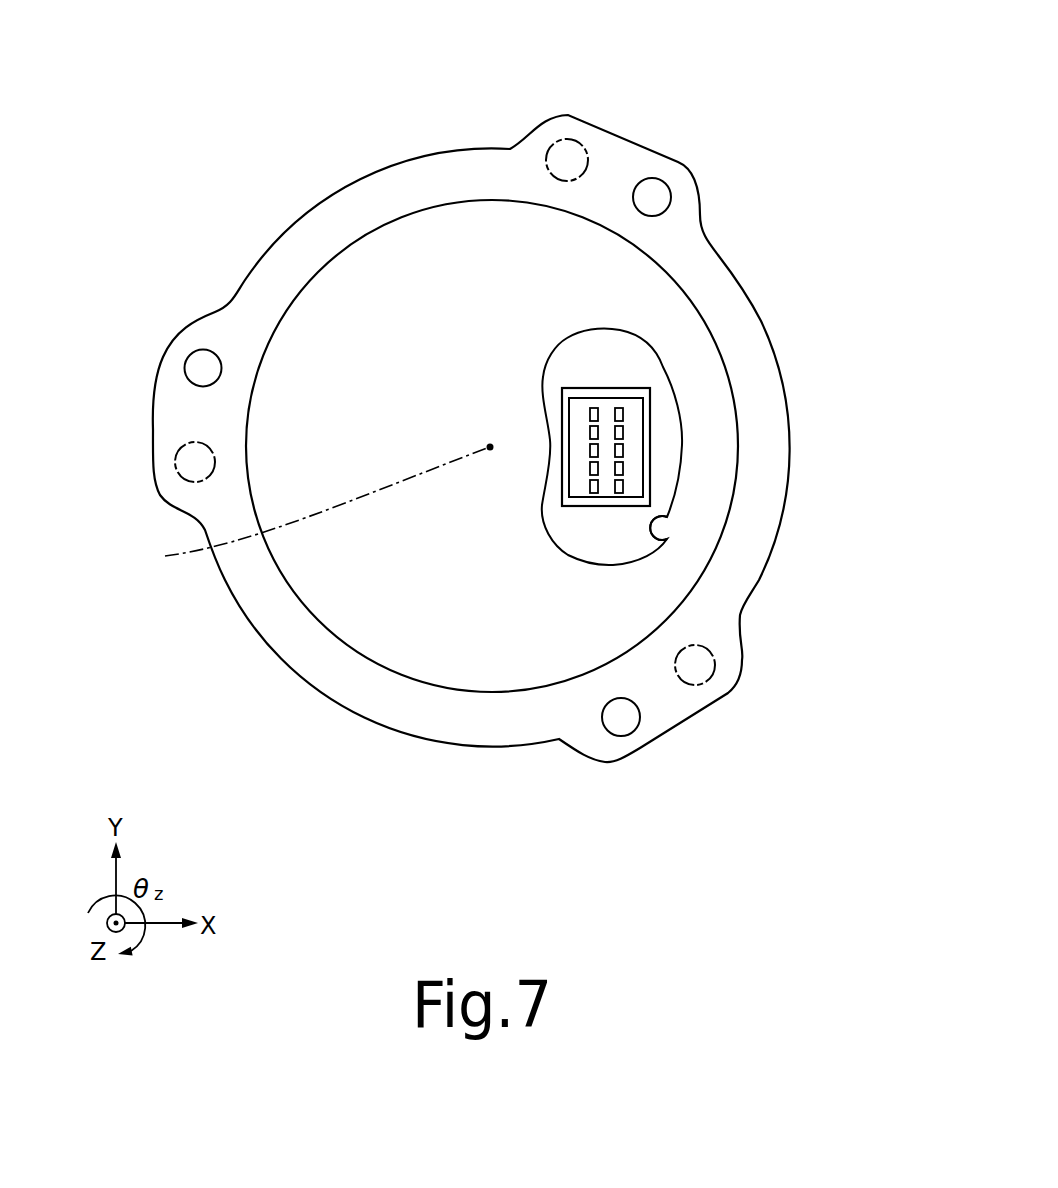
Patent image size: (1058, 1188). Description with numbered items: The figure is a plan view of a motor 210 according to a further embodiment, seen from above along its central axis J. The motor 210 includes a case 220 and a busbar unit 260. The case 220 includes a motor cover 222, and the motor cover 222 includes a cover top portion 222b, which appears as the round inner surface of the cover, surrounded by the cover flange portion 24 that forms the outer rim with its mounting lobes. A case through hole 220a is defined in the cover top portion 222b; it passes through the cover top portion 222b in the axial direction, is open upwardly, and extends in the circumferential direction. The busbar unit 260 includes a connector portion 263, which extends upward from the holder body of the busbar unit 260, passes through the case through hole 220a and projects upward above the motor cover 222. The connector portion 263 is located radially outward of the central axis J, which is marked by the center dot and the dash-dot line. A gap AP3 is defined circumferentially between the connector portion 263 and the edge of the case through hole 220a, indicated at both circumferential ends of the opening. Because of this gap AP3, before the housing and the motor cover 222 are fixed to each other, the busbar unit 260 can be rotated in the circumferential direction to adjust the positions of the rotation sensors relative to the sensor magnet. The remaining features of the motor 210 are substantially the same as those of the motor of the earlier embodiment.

The motor 210 is at (501, 416).
The case 220 is at (435, 438).
The motor cover 222 is at (240, 643).
The cover top portion 222b is at (367, 573).
The case through hole 220a is at (668, 533).
The cover flange portion 24 is at (760, 457).
The busbar unit 260 is at (742, 439).
The connector portion 263 is at (647, 415).
The gap AP3 is at (605, 357).
The central axis J is at (318, 510).